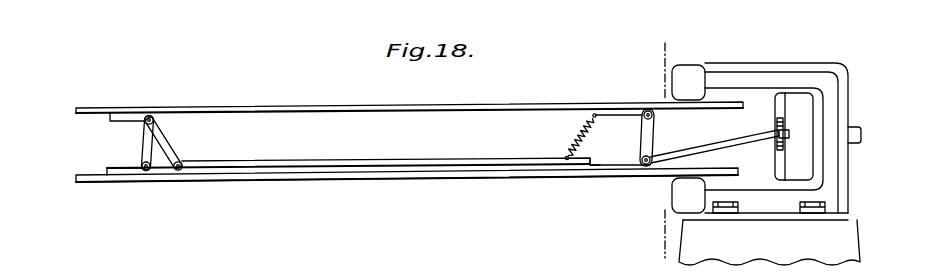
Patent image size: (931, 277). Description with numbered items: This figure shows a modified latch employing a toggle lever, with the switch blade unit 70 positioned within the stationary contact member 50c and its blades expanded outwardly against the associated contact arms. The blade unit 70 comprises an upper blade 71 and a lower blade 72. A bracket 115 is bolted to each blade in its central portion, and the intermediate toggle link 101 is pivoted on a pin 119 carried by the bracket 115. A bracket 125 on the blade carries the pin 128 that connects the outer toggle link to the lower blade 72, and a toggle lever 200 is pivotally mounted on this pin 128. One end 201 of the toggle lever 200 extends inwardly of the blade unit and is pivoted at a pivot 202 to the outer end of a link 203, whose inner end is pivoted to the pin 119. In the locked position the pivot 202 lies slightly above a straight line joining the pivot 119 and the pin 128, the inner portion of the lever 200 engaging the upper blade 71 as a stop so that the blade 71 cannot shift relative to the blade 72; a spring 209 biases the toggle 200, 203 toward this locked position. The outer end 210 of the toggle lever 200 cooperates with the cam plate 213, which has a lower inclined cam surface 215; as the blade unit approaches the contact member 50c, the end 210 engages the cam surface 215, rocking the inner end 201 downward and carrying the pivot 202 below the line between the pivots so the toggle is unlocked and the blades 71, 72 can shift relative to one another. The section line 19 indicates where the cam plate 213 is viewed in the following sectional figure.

The section line 19 is at (681, 52).
The stationary contact member 50c is at (768, 61).
The switch blade unit 70 is at (325, 103).
The upper blade 71 is at (496, 103).
The lower blade 72 is at (390, 179).
The intermediate toggle link 101 is at (145, 147).
The bracket 115 is at (118, 115).
The pin 119 is at (150, 116).
The bracket 125 is at (593, 167).
The pin 128 is at (640, 163).
The toggle lever 200 is at (430, 158).
The inner end of toggle lever 201 is at (260, 170).
The pivot 202 is at (177, 172).
The link 203 is at (166, 140).
The spring 209 is at (586, 122).
The outer end of toggle lever 210 is at (728, 142).
The cam plate 213 is at (771, 205).
The inclined cam surface 215 is at (776, 146).